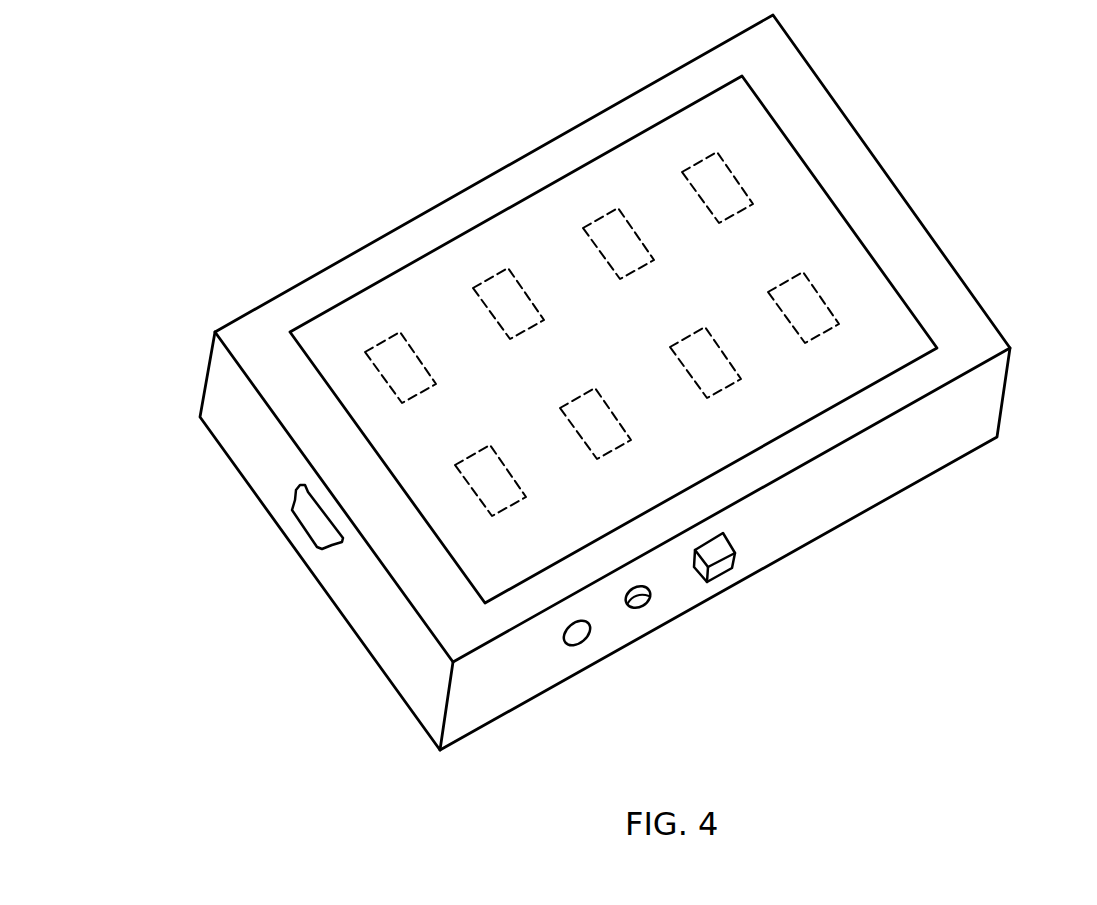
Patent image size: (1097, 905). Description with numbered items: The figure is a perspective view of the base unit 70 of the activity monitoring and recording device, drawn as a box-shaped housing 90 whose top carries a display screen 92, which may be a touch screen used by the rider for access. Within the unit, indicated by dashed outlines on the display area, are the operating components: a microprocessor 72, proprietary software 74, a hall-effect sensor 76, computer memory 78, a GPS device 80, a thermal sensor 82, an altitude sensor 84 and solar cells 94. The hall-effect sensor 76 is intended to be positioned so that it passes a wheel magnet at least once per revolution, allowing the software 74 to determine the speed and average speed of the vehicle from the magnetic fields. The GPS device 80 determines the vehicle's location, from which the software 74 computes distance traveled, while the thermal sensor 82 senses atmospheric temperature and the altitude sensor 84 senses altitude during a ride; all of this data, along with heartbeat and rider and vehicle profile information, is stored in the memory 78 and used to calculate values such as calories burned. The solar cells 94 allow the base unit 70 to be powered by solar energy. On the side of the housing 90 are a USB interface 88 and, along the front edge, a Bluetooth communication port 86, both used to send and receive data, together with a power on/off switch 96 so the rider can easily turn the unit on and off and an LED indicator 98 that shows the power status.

The base unit 70 is at (244, 149).
The microprocessor 72 is at (397, 352).
The proprietary software 74 is at (512, 300).
The hall-effect sensor 76 is at (703, 183).
The computer memory 78 is at (485, 480).
The GPS device 80 is at (603, 442).
The thermal sensor 82 is at (717, 383).
The altitude sensor 84 is at (818, 313).
The Bluetooth communication port 86 is at (570, 645).
The USB interface 88 is at (305, 527).
The housing 90 is at (807, 98).
The display screen 92 is at (783, 220).
The solar cells 94 is at (603, 230).
The power on/off switch 96 is at (717, 572).
The LED indicator 98 is at (642, 608).